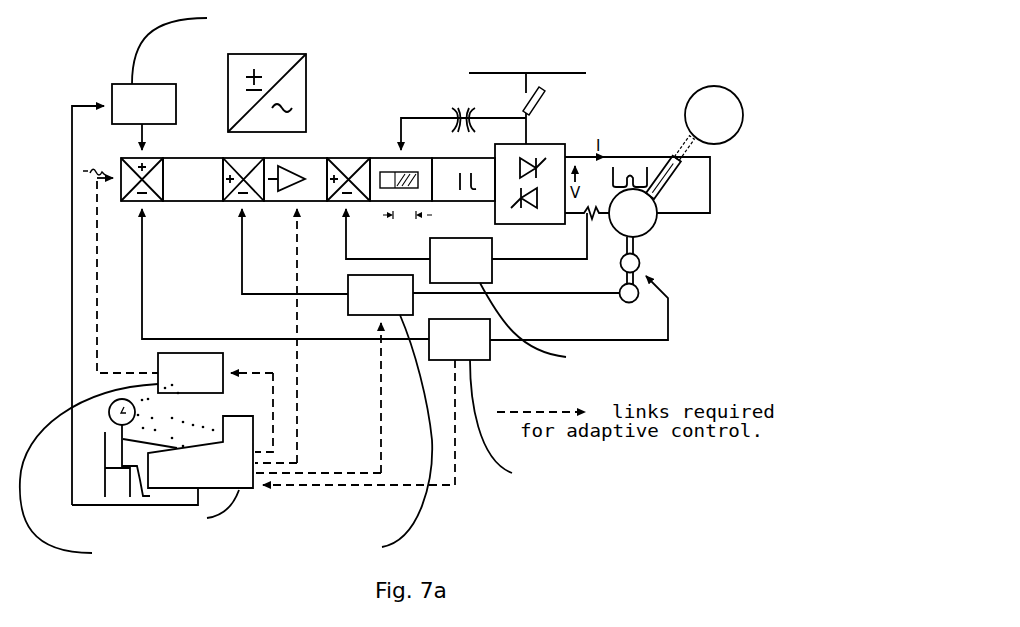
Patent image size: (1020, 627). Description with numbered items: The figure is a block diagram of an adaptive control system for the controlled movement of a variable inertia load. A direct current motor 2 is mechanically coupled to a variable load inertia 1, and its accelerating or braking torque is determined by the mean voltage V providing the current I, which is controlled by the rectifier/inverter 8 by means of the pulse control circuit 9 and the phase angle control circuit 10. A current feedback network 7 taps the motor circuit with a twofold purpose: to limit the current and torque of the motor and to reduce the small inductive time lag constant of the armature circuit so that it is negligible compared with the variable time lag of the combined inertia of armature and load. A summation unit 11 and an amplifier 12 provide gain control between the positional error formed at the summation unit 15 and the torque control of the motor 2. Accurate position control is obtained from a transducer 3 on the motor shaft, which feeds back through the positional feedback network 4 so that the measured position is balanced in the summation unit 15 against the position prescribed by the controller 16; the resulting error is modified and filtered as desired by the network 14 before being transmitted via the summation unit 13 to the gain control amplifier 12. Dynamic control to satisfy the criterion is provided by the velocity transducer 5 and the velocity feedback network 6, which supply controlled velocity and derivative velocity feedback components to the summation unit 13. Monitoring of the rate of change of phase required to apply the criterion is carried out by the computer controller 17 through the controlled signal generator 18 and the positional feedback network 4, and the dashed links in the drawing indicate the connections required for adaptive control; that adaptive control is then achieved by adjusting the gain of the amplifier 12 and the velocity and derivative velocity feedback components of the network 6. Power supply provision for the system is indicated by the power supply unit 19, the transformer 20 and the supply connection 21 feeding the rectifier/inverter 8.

The variable load inertia 1 is at (694, 142).
The direct current motor 2 is at (633, 202).
The transducer 3 is at (630, 255).
The positional feedback network 4 is at (571, 411).
The velocity transducer 5 is at (629, 287).
The velocity feedback network 6 is at (356, 415).
The current feedback network 7 is at (597, 311).
The rectifier/inverter 8 is at (530, 184).
The pulse control circuit 9 is at (463, 179).
The phase angle control circuit 10 is at (402, 190).
The summation unit 11 is at (350, 179).
The amplifier 12 is at (295, 179).
The summation unit 13 is at (245, 179).
The network 14 is at (193, 179).
The summation unit 15 is at (144, 179).
The controller 16 is at (222, 66).
The computer controller 17 is at (175, 463).
The controlled signal generator 18 is at (122, 477).
The power supply unit 19 is at (280, 93).
The power supply transformer 20 is at (463, 108).
The power supply connection 21 is at (527, 108).